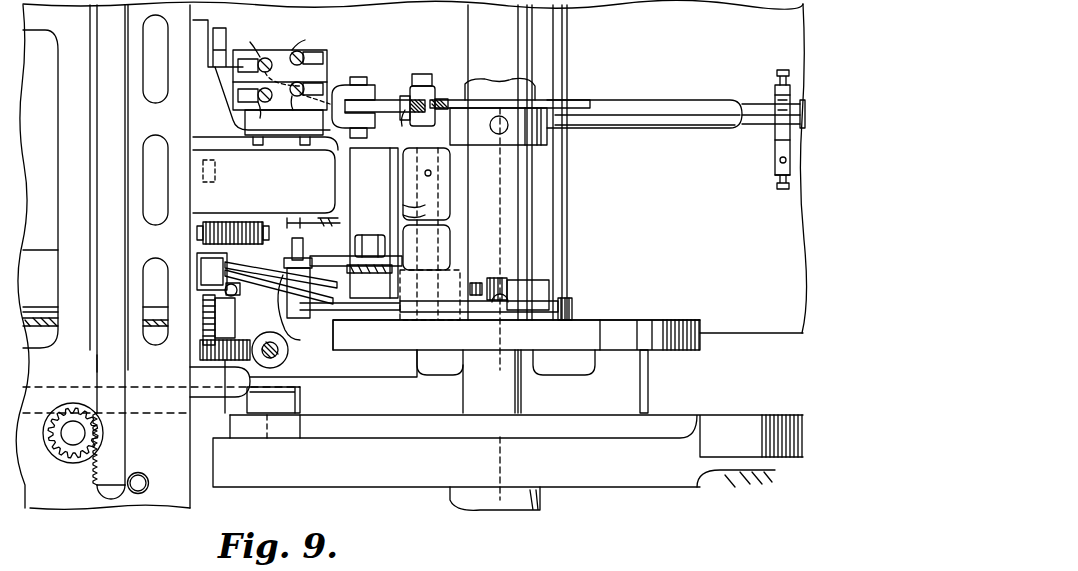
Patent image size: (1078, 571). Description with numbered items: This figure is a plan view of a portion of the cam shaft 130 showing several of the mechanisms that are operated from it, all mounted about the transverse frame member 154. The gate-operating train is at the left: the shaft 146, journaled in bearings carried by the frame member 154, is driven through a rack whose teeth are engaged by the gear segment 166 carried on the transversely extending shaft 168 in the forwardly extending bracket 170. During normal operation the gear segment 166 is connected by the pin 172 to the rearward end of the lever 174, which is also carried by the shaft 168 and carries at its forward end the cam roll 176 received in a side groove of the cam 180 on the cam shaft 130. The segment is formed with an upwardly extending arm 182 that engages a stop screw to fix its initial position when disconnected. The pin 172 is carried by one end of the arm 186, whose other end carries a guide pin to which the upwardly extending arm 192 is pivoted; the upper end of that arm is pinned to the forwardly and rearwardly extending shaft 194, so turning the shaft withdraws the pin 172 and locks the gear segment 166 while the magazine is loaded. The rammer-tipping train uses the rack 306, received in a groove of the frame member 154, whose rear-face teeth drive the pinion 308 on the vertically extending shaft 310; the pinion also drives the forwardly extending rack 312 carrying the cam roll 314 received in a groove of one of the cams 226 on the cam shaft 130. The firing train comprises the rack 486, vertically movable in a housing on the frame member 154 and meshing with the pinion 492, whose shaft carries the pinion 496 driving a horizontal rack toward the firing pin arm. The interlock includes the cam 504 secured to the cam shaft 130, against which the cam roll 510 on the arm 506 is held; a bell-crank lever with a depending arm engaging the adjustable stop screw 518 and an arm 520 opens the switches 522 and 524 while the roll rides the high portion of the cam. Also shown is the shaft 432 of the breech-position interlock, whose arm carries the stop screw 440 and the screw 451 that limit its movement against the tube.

The cam shaft 130 is at (520, 393).
The shaft 146 is at (41, 310).
The transverse frame member 154 is at (165, 374).
The gear segment 166 is at (280, 285).
The transversely extending shaft 168 is at (440, 210).
The forwardly extending bracket 170 is at (384, 193).
The pin 172 is at (304, 252).
The lever 174 is at (379, 312).
The cam roll 176 is at (574, 322).
The cam 180 is at (651, 330).
The upwardly extending arm 182 is at (493, 263).
The arm 186 is at (318, 275).
The upwardly extending arm 192 is at (385, 252).
The forwardly and rearwardly extending shaft 194 is at (338, 258).
The cams 226 is at (580, 471).
The rack 306 is at (105, 362).
The pinion 308 is at (60, 455).
The vertically extending shaft 310 is at (80, 445).
The forwardly extending rack 312 is at (133, 421).
The cam roll 314 is at (300, 426).
The shaft 432 is at (752, 128).
The stop screw 440 is at (779, 72).
The screw 451 is at (777, 186).
The rack 486 is at (281, 354).
The pinion 492 is at (226, 422).
The pinion 496 is at (236, 232).
The cam 504 is at (483, 100).
The arm 506 is at (415, 86).
The cam roll 510 is at (440, 100).
The adjustable stop screw 518 is at (415, 113).
The arm 520 is at (333, 95).
The switch 522 is at (275, 55).
The switch 524 is at (278, 107).